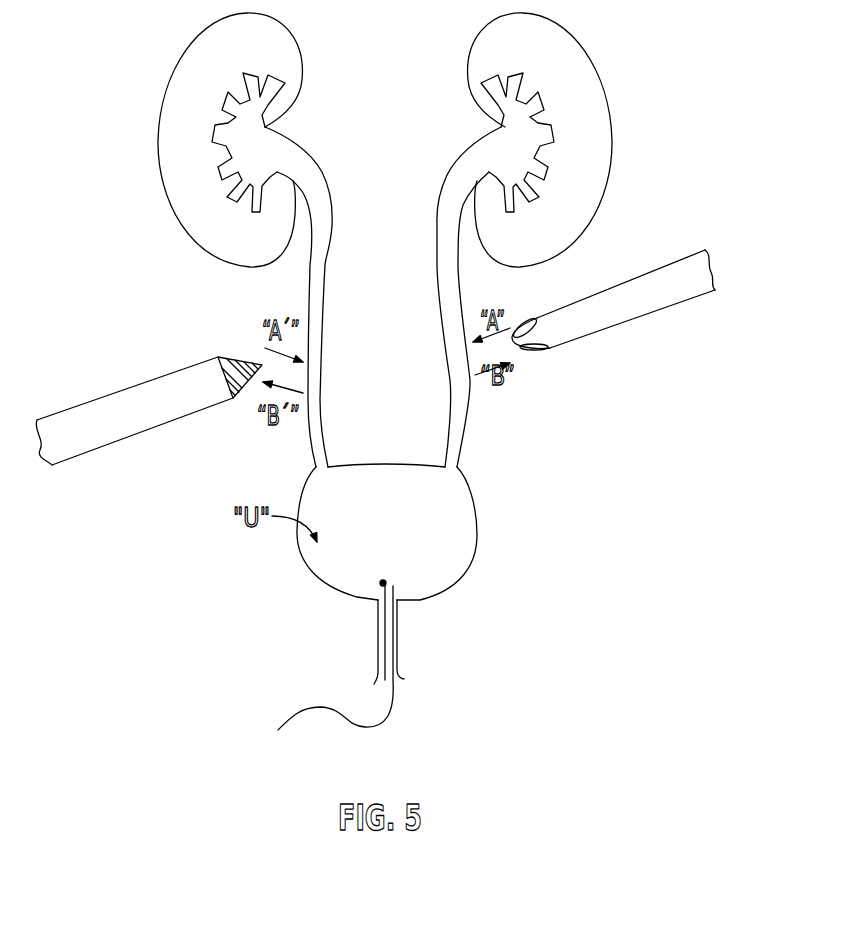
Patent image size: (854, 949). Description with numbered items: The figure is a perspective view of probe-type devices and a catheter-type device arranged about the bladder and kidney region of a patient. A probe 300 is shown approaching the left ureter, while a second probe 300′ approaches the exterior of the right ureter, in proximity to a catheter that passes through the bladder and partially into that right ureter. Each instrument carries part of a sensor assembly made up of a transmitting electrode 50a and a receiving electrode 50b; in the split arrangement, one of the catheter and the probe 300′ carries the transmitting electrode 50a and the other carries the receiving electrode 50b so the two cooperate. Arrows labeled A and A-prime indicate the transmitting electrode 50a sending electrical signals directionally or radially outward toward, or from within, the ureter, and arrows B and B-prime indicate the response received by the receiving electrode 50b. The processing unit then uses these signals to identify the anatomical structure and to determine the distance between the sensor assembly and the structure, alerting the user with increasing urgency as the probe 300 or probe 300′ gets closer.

The transmitting electrode 50a is at (530, 318).
The receiving electrode 50b is at (533, 352).
The probe-type instrument 300 is at (673, 327).
The probe-type instrument 300′ is at (126, 457).